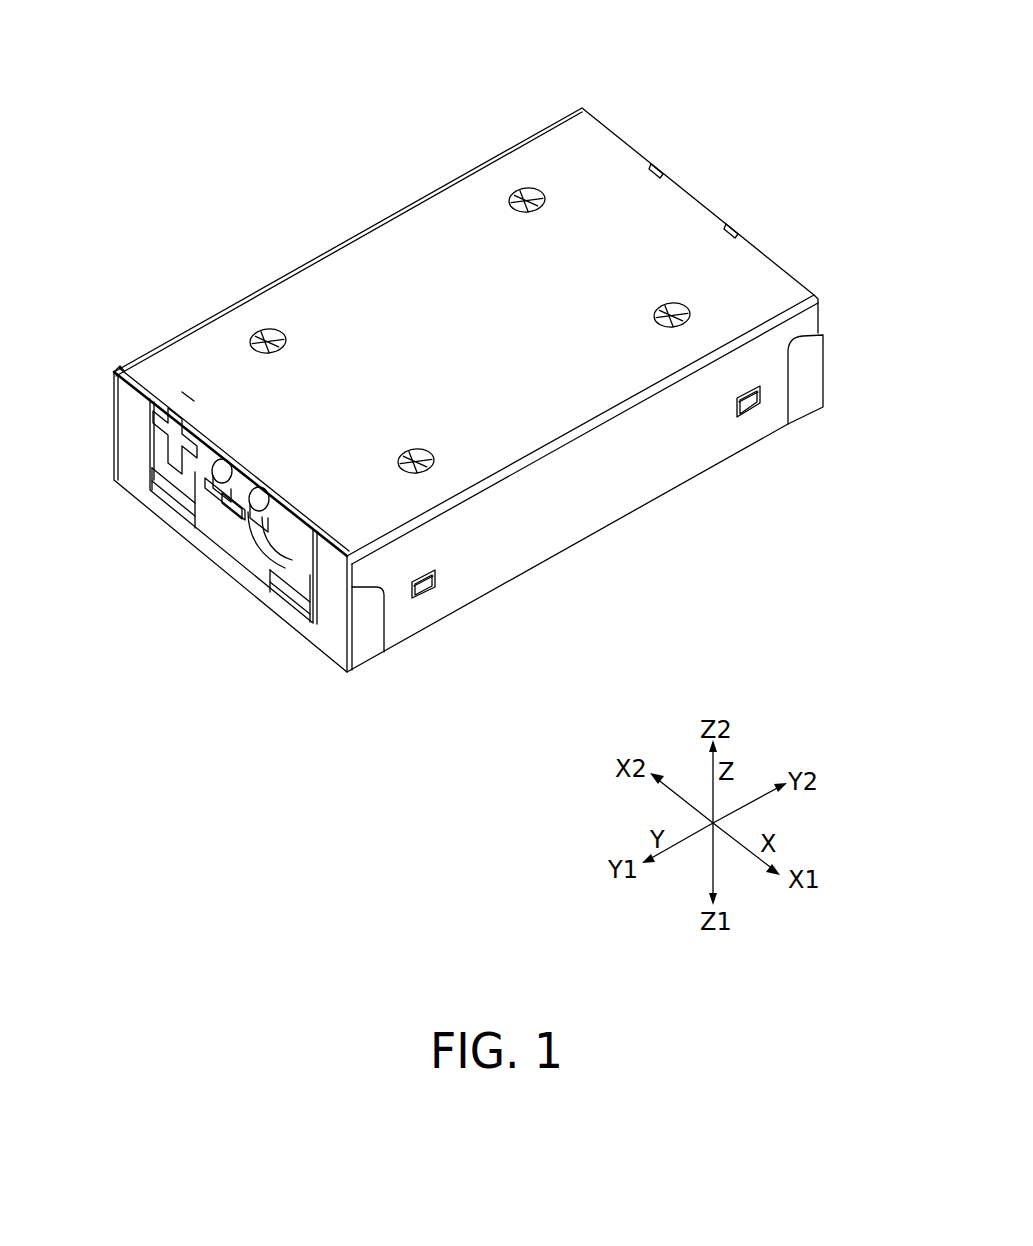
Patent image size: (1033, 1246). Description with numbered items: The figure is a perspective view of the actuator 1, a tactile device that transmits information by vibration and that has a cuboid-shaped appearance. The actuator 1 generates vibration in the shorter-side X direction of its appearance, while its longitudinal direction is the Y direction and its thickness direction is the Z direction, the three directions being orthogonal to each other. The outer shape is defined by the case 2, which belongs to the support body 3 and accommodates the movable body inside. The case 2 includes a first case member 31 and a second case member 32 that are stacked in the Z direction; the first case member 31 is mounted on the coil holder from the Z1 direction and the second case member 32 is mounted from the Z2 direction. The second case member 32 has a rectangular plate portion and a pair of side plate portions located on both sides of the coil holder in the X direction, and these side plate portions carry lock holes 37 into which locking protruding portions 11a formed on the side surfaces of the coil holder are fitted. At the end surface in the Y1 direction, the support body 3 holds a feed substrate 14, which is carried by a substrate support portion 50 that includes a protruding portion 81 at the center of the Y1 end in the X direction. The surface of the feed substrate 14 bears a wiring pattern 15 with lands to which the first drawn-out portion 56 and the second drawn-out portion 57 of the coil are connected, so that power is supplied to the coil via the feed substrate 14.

The actuator 1 is at (186, 119).
The case 2 is at (916, 253).
The support body 3 is at (671, 137).
The second case member 32 is at (738, 278).
The first case member 31 is at (657, 500).
The lock hole 37 is at (427, 598).
The locking protruding portion 11a is at (423, 590).
The substrate support portion 50 is at (138, 396).
The wiring pattern 15 is at (175, 446).
The feed substrate 14 is at (188, 392).
The second drawn-out portion 57 is at (232, 483).
The protruding portion 81 is at (242, 518).
The first drawn-out portion 56 is at (258, 522).